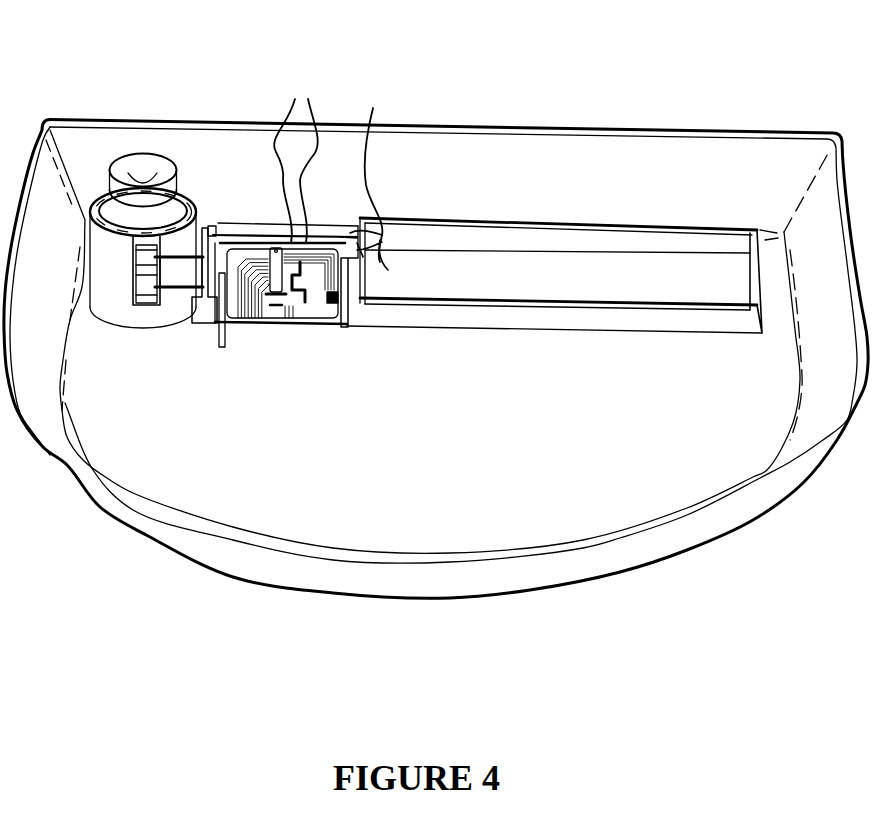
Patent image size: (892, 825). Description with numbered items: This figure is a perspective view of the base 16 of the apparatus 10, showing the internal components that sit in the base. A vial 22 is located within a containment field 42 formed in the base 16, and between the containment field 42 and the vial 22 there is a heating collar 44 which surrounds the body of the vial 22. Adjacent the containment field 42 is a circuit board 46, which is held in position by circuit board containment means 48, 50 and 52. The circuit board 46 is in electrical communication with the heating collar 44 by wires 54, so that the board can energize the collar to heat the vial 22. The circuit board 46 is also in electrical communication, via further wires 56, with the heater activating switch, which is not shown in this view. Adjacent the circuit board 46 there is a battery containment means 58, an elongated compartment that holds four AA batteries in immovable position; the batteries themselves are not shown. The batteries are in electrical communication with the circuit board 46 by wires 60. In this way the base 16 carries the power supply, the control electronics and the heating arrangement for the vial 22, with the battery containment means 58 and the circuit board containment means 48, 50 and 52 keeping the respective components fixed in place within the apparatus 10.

The apparatus 10 is at (693, 124).
The base 16 is at (486, 158).
The vial 22 is at (143, 166).
The containment field 42 is at (108, 298).
The heating collar 44 is at (147, 253).
The circuit board 46 is at (313, 318).
The circuit board containment means 48 is at (248, 224).
The circuit board containment means 50 is at (226, 333).
The circuit board containment means 52 is at (355, 318).
The wires 54 is at (205, 228).
The wires 56 is at (296, 161).
The battery containment means 58 is at (607, 225).
The wires 60 is at (367, 179).